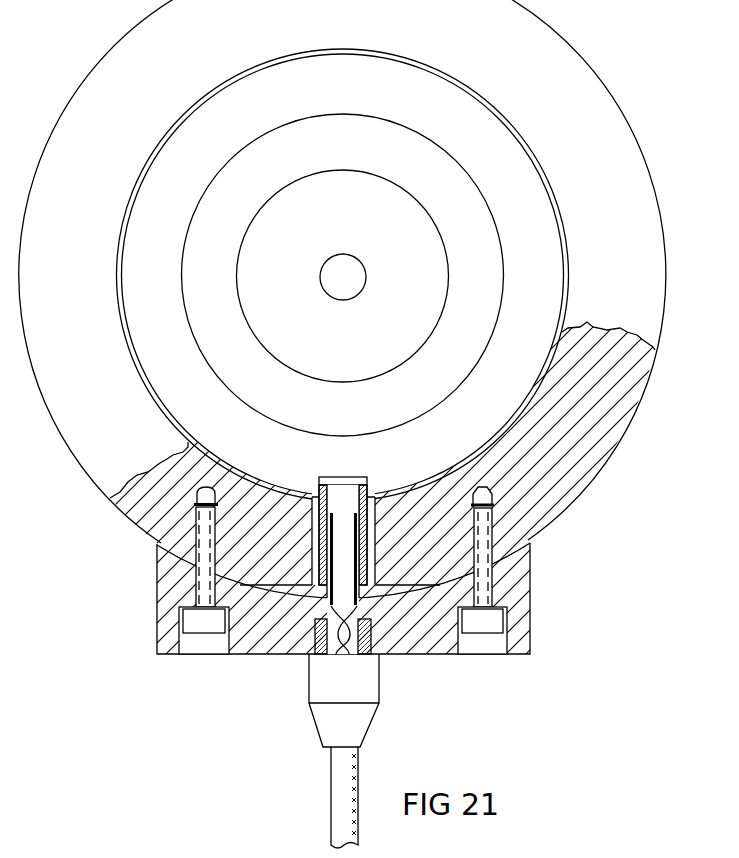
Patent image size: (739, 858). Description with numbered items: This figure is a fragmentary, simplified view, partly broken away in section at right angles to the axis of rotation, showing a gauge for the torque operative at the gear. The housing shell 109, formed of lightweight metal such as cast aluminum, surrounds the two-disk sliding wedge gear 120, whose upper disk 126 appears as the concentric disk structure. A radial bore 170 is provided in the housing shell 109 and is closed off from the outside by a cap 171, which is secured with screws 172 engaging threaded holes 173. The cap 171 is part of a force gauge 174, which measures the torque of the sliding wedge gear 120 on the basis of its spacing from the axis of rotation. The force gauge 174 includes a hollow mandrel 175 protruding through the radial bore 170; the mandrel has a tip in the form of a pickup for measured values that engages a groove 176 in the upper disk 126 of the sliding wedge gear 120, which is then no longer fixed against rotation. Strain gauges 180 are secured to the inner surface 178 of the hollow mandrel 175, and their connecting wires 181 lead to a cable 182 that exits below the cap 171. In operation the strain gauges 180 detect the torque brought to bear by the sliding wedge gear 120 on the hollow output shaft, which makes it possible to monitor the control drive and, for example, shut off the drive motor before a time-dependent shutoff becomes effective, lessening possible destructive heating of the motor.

The housing shell 109 is at (600, 452).
The two-disk sliding wedge gear 120 is at (477, 222).
The upper disk 126 is at (143, 297).
The radial bore 170 is at (313, 563).
The cap 171 is at (525, 622).
The screws 172 is at (485, 578).
The threaded holes 173 is at (493, 500).
The force gauge 174 is at (533, 694).
The hollow mandrel 175 is at (323, 538).
The groove 176 is at (322, 477).
The inner surface 178 is at (363, 473).
The strain gauges 180 is at (382, 627).
The connecting wires 181 is at (336, 656).
The cable 182 is at (358, 774).